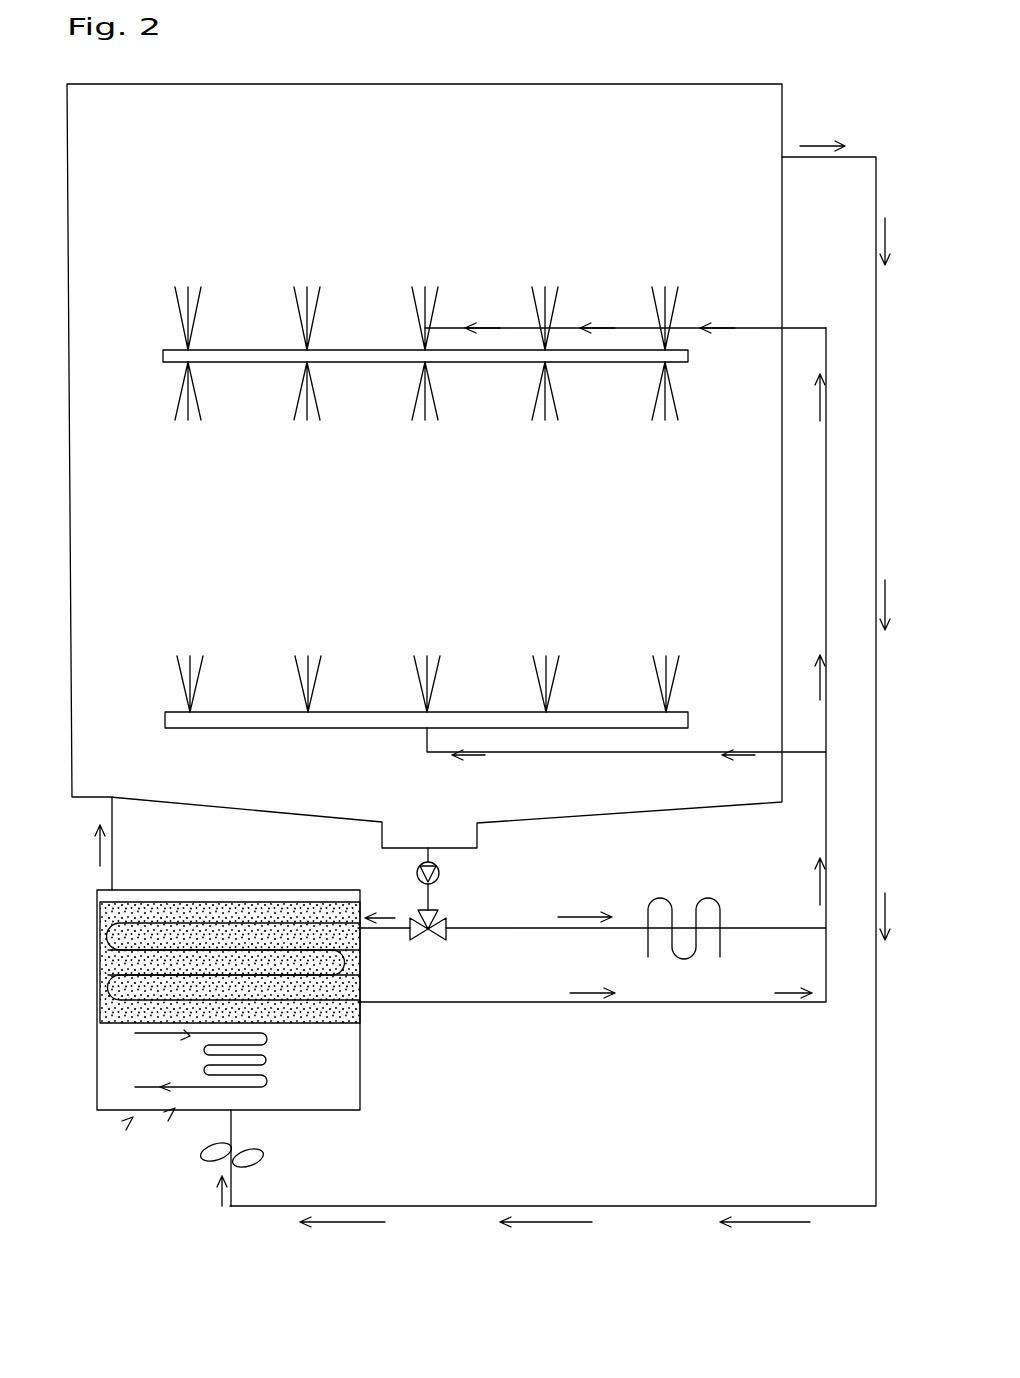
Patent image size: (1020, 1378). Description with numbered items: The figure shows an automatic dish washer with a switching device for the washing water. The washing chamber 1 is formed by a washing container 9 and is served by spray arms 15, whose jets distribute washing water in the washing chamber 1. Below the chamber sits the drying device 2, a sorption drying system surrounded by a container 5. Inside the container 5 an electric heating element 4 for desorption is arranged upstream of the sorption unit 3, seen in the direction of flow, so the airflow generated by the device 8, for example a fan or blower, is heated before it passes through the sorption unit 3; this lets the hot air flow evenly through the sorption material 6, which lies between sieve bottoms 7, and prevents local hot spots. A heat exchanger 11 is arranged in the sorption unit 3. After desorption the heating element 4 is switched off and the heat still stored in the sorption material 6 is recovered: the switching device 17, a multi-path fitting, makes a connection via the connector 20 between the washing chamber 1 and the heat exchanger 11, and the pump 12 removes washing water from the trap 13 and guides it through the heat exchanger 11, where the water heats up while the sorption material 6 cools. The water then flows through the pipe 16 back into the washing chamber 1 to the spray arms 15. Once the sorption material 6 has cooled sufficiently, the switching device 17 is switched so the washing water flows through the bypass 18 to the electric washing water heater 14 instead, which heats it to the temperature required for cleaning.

The washing chamber 1 is at (390, 502).
The drying device 2 is at (133, 1117).
The sorption unit 3 is at (312, 1024).
The heating element 4 is at (190, 1036).
The container 5 is at (175, 1108).
The sorption material 6 is at (99, 968).
The sieve bottoms 7 is at (285, 1024).
The device 8 is at (200, 1168).
The washing container 9 is at (620, 84).
The heat exchanger 11 is at (97, 1006).
The pump 12 is at (415, 870).
The trap 13 is at (462, 836).
The washing water heater 14 is at (646, 937).
The spray arms 15 is at (400, 350).
The pipe 16 is at (540, 1005).
The switching device 17 is at (438, 910).
The bypass 18 is at (515, 928).
The connector 20 is at (385, 933).